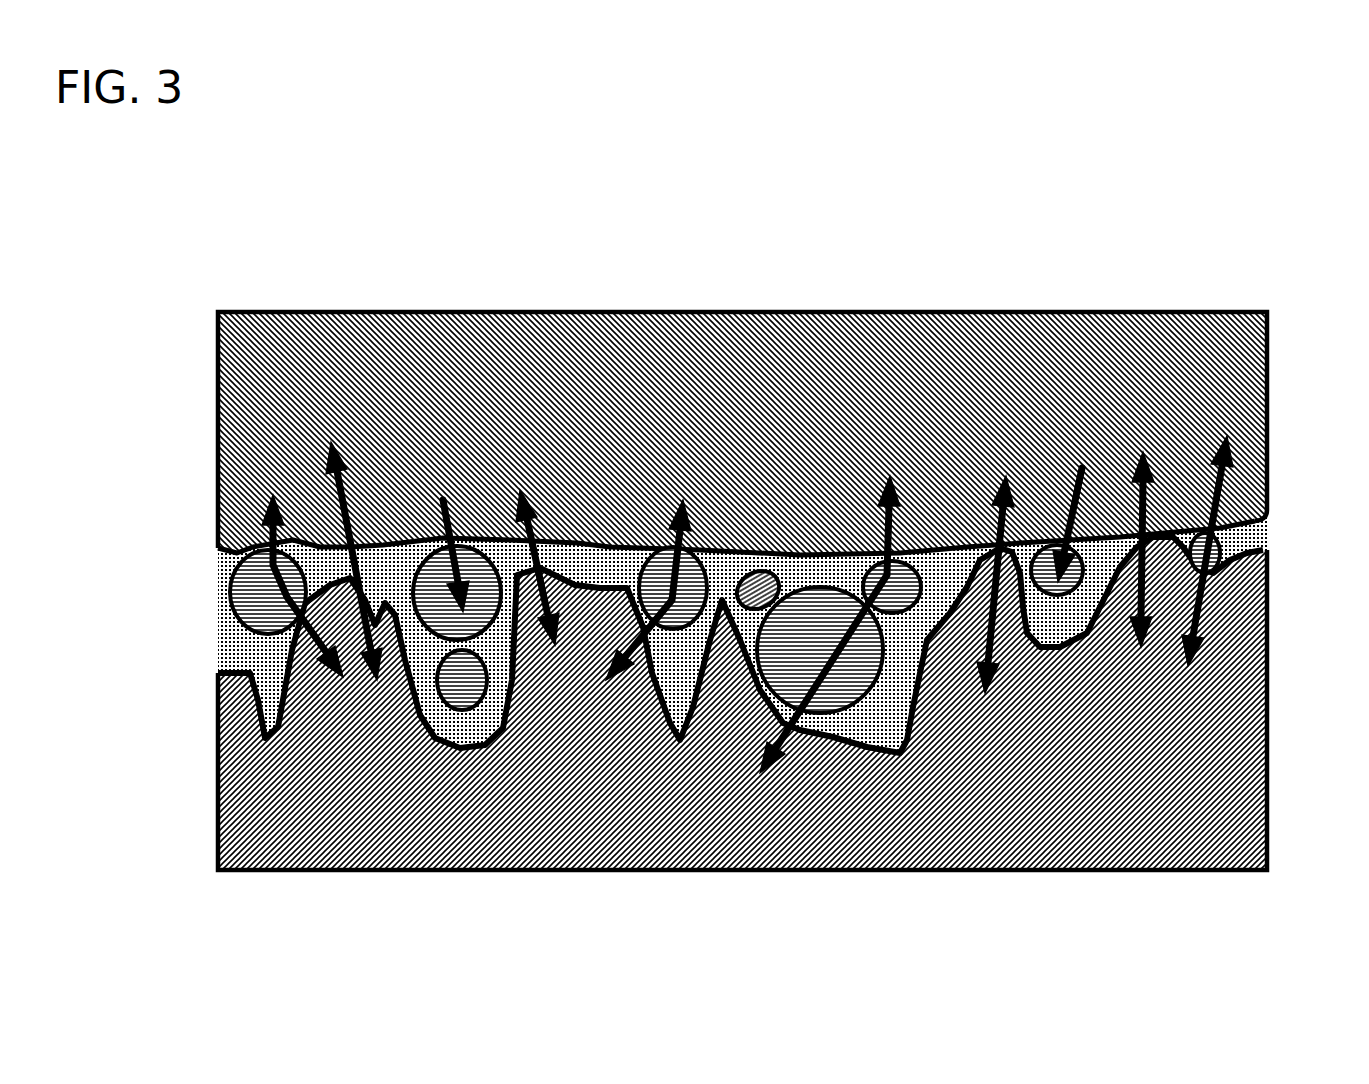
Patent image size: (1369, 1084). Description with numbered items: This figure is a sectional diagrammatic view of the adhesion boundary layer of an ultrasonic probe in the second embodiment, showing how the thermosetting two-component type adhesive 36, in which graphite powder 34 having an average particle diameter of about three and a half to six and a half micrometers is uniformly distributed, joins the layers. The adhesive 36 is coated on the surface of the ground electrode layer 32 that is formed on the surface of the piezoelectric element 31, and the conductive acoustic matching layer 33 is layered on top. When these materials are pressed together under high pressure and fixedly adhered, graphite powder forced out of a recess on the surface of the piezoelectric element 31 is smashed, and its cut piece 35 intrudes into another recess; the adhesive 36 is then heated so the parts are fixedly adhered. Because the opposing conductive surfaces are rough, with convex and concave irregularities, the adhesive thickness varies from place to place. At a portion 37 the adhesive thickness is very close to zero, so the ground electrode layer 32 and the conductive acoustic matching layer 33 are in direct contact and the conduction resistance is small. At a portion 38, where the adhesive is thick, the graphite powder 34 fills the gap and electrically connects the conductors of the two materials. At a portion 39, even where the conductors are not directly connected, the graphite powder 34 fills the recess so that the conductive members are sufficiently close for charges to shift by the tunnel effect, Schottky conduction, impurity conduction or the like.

The piezoelectric element 31 is at (352, 832).
The ground electrode layer 32 is at (691, 493).
The conductive acoustic matching layer 33 is at (910, 385).
The graphite powder 34 is at (813, 617).
The cut piece 35 is at (917, 555).
The thermosetting two-component type adhesive 36 is at (838, 570).
The portion where adhesive thickness is very close to zero 37 is at (510, 467).
The portion where adhesive is thick and graphite powder is filled 38 is at (667, 500).
The portion where graphite powder fills the recess without direct connection 39 is at (437, 493).